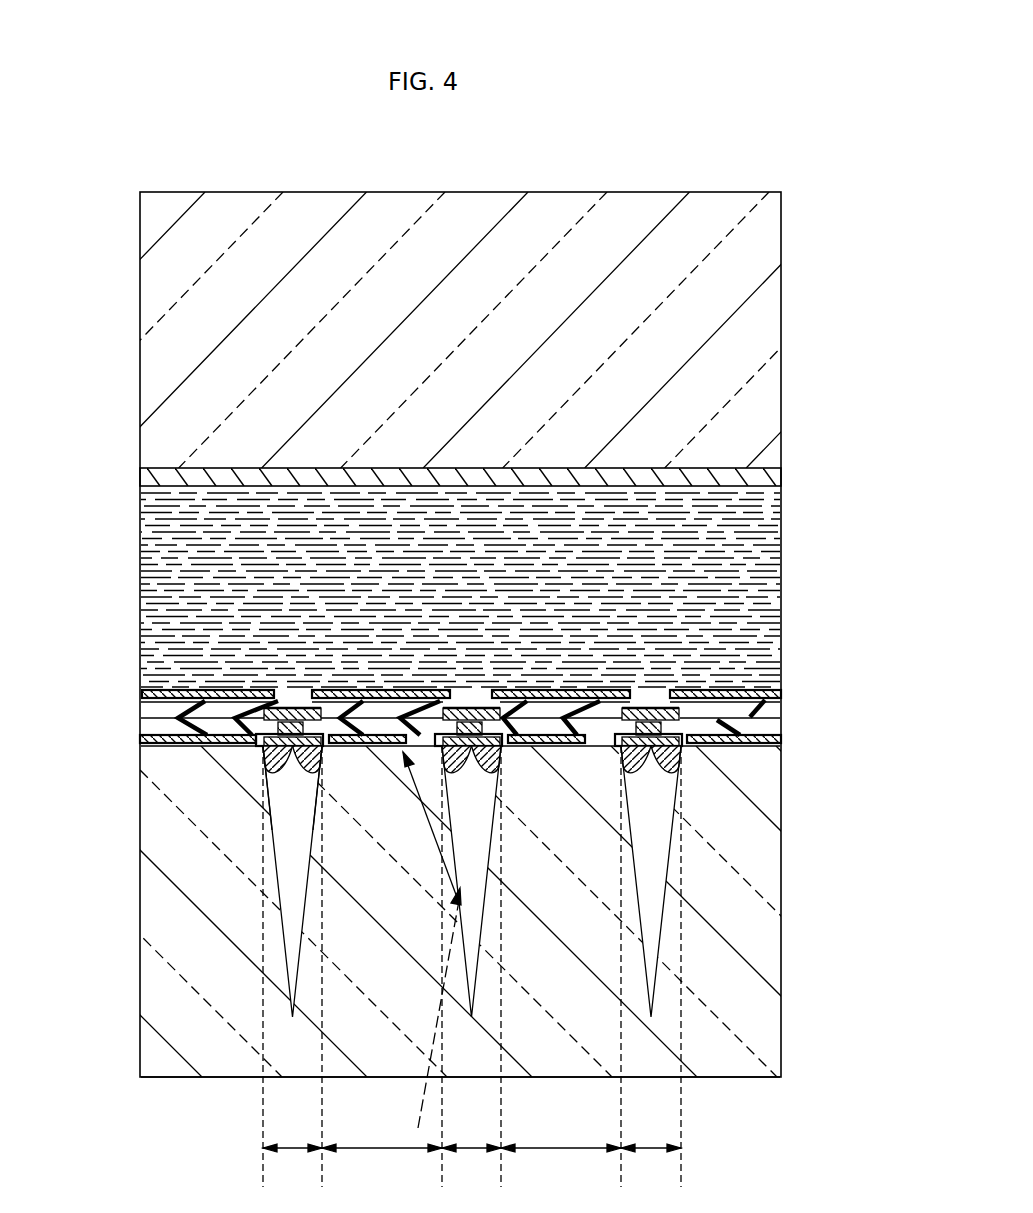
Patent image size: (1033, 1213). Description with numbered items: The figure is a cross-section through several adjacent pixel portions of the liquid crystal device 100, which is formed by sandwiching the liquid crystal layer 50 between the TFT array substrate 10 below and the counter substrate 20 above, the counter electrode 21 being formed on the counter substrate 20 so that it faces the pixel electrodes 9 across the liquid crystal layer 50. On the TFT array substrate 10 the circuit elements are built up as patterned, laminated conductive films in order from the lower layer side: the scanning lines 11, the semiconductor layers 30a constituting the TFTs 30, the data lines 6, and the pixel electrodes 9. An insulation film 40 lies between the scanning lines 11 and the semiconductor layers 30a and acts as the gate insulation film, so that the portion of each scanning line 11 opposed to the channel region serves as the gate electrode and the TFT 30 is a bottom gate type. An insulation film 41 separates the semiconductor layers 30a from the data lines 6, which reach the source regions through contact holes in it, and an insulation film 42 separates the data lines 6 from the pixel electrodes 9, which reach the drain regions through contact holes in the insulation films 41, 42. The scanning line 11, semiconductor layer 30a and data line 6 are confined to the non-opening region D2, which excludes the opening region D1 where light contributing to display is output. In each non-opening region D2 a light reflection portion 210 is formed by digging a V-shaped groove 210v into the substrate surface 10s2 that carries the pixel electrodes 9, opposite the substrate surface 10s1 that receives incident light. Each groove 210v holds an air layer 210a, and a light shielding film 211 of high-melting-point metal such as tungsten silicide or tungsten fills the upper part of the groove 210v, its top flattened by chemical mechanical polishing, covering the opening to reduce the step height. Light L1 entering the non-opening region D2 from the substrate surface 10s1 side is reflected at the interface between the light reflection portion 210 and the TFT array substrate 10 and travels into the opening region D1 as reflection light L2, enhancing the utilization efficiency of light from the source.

The liquid crystal device 100 is at (174, 170).
The TFT array substrate 10 is at (766, 938).
The substrate surface 10s1 is at (747, 1078).
The substrate surface 10s2 is at (160, 742).
The scanning line 11 is at (693, 745).
The counter substrate 20 is at (766, 339).
The counter electrode 21 is at (766, 486).
The liquid crystal layer 50 is at (766, 584).
The data line 6 is at (673, 715).
The pixel electrode 9 is at (757, 692).
The TFT 30 is at (259, 723).
The semiconductor layer 30a is at (255, 735).
The insulation film 40 is at (773, 742).
The insulation film 41 is at (763, 723).
The insulation film 42 is at (768, 707).
The light reflection portion 210 is at (67, 803).
The air layer 210a is at (287, 833).
The V-shaped groove 210v is at (285, 880).
The light shielding film 211 is at (263, 752).
The light L1 is at (423, 1098).
The reflection light L2 is at (425, 808).
The opening region D1 is at (471, 1164).
The non-opening region D2 is at (472, 966).